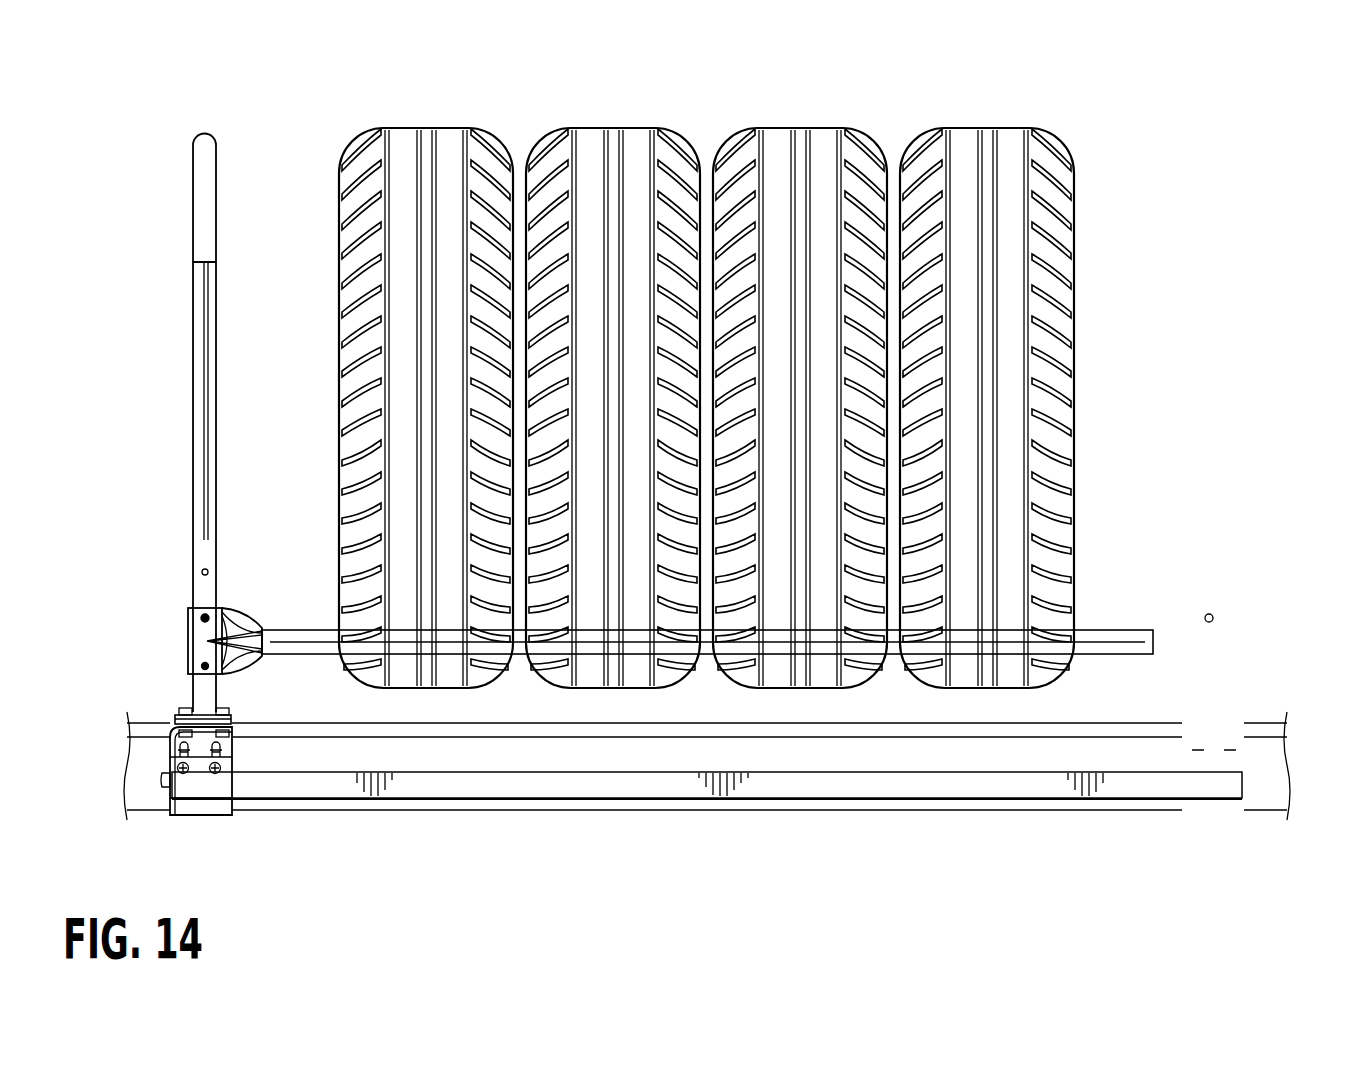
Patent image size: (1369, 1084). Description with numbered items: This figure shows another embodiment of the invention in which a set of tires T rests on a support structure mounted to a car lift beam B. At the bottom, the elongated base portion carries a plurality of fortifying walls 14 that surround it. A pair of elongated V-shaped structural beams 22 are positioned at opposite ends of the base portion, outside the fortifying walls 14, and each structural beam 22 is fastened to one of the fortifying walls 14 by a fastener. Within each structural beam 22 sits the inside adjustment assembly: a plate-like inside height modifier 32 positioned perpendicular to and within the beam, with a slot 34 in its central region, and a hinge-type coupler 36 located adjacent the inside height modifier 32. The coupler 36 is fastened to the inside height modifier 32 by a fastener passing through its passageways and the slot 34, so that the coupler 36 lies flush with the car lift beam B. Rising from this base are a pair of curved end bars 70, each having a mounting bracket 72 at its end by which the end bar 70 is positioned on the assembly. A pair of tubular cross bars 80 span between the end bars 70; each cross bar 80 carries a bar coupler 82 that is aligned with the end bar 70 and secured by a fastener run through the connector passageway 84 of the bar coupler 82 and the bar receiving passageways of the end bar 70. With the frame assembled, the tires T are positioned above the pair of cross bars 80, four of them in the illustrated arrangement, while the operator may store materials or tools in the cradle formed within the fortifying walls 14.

The fortifying wall 14 is at (588, 790).
The structural beam 22 is at (165, 766).
The inside height modifier 32 is at (210, 746).
The slot 34 is at (183, 748).
The coupler 36 is at (200, 790).
The end bar 70 is at (197, 160).
The mounting bracket 72 is at (200, 714).
The cross bar 80 is at (778, 643).
The bar coupler 82 is at (197, 637).
The connector passageway 84 is at (205, 617).
The tire T is at (777, 137).
The car lift beam B is at (1277, 786).